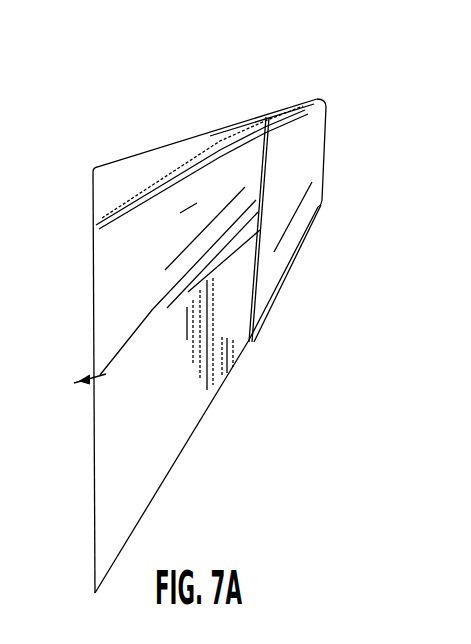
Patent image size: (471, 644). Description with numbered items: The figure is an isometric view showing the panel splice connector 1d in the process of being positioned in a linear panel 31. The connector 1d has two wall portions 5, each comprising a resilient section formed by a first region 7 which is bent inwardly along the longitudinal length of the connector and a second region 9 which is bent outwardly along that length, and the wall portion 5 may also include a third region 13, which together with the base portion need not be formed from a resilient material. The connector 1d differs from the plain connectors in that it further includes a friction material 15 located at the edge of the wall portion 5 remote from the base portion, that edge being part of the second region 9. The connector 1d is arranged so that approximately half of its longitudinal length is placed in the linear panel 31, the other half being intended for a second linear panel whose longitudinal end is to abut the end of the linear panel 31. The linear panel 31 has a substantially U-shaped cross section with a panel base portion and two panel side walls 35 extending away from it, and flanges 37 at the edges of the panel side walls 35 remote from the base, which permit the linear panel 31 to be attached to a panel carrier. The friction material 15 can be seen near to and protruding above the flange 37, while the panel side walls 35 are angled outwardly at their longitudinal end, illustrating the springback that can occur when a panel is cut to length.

The second region 9 is at (108, 227).
The connector 1d is at (130, 398).
The third region 13 is at (146, 477).
The friction material 15 is at (160, 168).
The flange 37 is at (300, 115).
The panel side wall 35 is at (303, 140).
The linear panel 31 is at (287, 177).
The first region 7 is at (137, 323).
The wall portion 5 is at (172, 386).